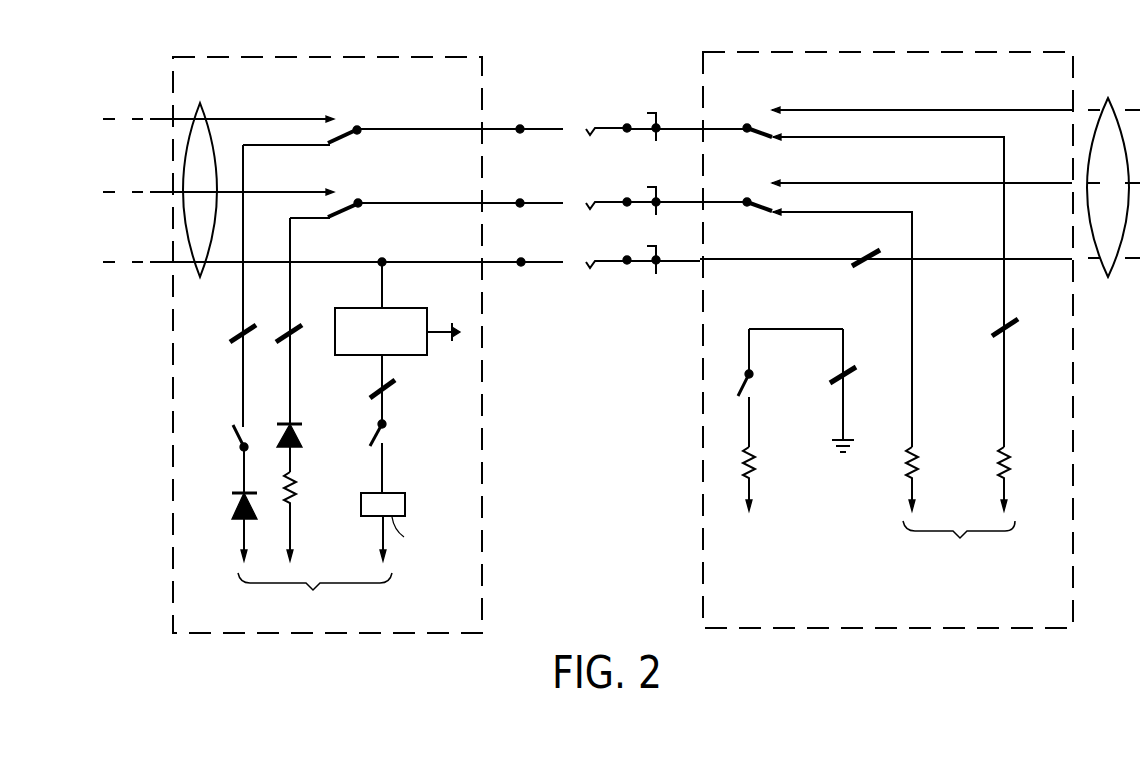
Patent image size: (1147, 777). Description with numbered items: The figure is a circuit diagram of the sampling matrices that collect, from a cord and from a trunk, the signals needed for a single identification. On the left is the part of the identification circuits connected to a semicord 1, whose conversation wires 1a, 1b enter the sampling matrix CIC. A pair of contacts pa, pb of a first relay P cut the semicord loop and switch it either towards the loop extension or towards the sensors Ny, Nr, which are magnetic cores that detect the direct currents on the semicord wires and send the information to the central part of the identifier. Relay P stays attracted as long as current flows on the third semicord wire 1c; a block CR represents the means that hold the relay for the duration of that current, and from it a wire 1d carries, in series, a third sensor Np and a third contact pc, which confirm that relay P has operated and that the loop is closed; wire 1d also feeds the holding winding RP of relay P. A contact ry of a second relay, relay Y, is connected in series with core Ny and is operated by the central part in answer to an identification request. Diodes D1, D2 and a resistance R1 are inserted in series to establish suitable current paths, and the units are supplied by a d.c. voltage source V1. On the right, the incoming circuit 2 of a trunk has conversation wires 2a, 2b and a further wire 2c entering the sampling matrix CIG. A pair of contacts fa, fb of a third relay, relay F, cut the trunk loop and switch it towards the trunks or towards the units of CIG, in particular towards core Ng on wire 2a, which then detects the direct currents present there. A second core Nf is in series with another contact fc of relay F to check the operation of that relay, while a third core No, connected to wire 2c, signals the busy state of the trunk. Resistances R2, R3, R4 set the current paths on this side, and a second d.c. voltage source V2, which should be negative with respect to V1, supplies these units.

The semicord 1 is at (200, 105).
The conversation wire of the semicord 1a is at (244, 118).
The conversation wire of the semicord 1b is at (272, 190).
The third semicord wire 1c is at (268, 260).
The wire 1d is at (378, 378).
The contact of relay P pa is at (344, 134).
The contact of relay P pb is at (344, 211).
The third contact of relay P pc is at (380, 440).
The block CR is at (357, 307).
The sensor Ny is at (232, 337).
The sensor Nr is at (283, 336).
The third sensor Np is at (395, 393).
The contact of relay Y ry is at (233, 432).
The diode D1 is at (241, 522).
The diode D2 is at (303, 437).
The resistance R1 is at (298, 488).
The holding winding of relay P RP is at (407, 508).
The sampling matrix CIC is at (486, 441).
The d.c. voltage source V1 is at (501, 572).
The incoming circuit of the trunk 2 is at (1113, 280).
The conversation wire of the trunk incoming circuit 2a is at (685, 126).
The conversation wire of the trunk incoming circuit 2b is at (685, 199).
The wire of the trunk incoming circuit 2c is at (685, 258).
The contact of relay F fa is at (768, 134).
The contact of relay F fb is at (768, 210).
The contact of relay F fc is at (741, 388).
The third core of matrix CIG No is at (868, 268).
The second core of matrix CIG Nf is at (847, 374).
The core Ng is at (1015, 325).
The resistance R2 is at (1010, 455).
The resistance R3 is at (918, 461).
The resistance R4 is at (757, 467).
The d.c. voltage source V2 is at (959, 544).
The sampling matrix CIG is at (1075, 62).